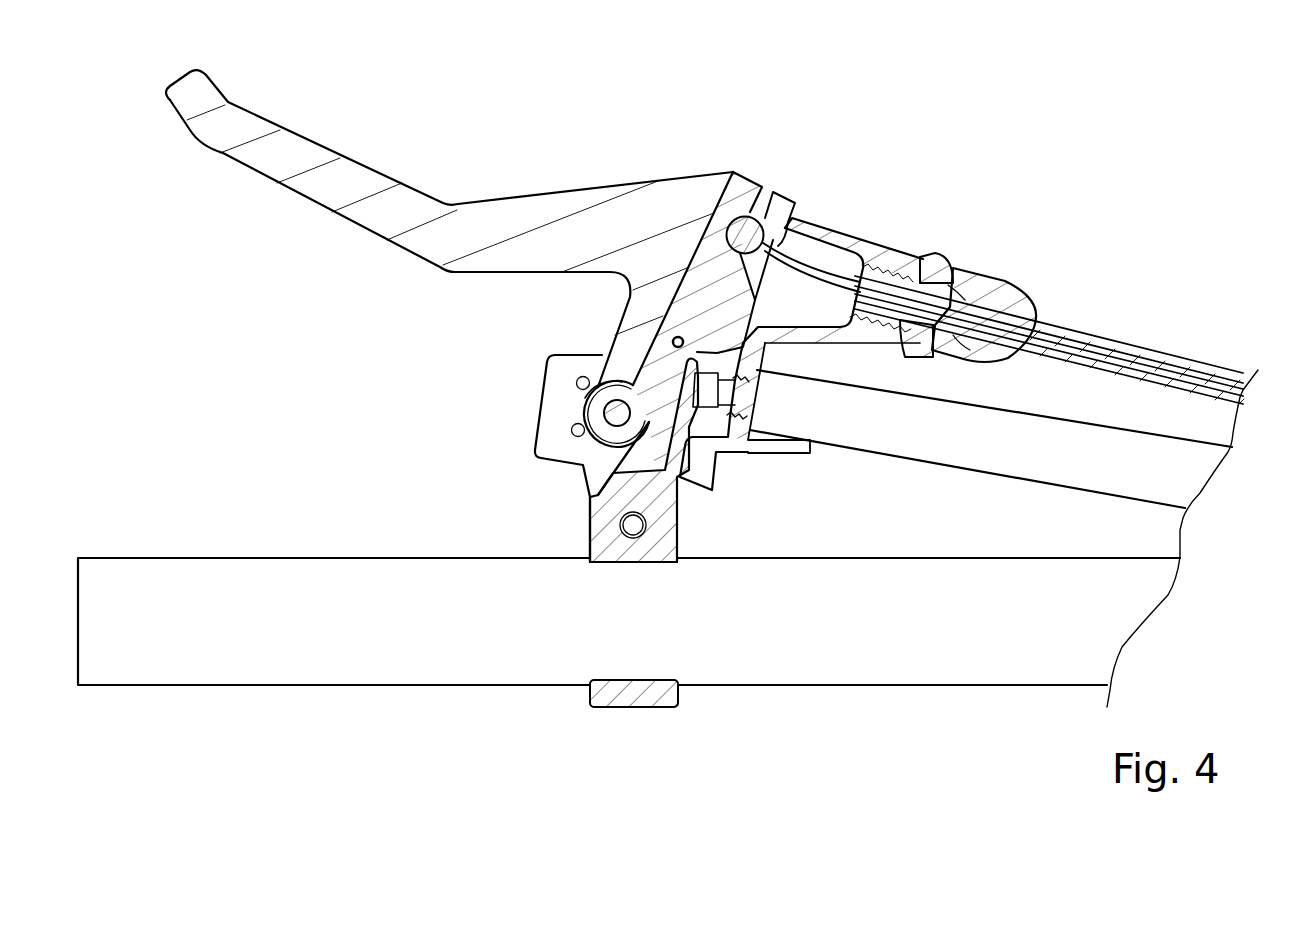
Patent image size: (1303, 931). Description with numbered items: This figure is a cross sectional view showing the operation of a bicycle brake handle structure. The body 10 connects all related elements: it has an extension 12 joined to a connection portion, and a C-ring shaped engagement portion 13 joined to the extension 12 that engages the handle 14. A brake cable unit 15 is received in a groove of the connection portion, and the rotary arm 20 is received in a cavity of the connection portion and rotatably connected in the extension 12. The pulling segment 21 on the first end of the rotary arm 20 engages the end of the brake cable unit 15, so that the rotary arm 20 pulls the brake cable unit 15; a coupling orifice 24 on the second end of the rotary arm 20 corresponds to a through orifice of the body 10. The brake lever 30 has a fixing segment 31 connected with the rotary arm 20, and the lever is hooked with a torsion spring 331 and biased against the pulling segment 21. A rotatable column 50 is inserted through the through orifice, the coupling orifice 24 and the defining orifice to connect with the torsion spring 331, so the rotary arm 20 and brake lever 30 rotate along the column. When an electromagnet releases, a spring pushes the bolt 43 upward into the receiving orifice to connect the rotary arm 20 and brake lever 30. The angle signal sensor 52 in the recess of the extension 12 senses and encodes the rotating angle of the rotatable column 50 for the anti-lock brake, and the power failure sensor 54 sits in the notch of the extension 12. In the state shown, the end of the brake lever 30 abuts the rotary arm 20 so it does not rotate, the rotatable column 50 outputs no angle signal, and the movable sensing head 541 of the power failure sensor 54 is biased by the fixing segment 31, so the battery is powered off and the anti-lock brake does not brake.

The body 10 is at (872, 233).
The extension 12 is at (555, 433).
The engagement portion 13 is at (613, 700).
The handle 14 is at (483, 660).
The brake cable unit 15 is at (1073, 330).
The rotary arm 20 is at (753, 172).
The pulling segment 21 is at (740, 240).
The coupling orifice 24 is at (583, 409).
The brake lever 30 is at (607, 187).
The fixing segment 31 is at (683, 387).
The bolt 43 is at (677, 337).
The rotatable column 50 is at (600, 409).
The angle signal sensor 52 is at (742, 450).
The power failure sensor 54 is at (930, 432).
The torsion spring 331 is at (584, 457).
The movable sensing head 541 is at (625, 378).